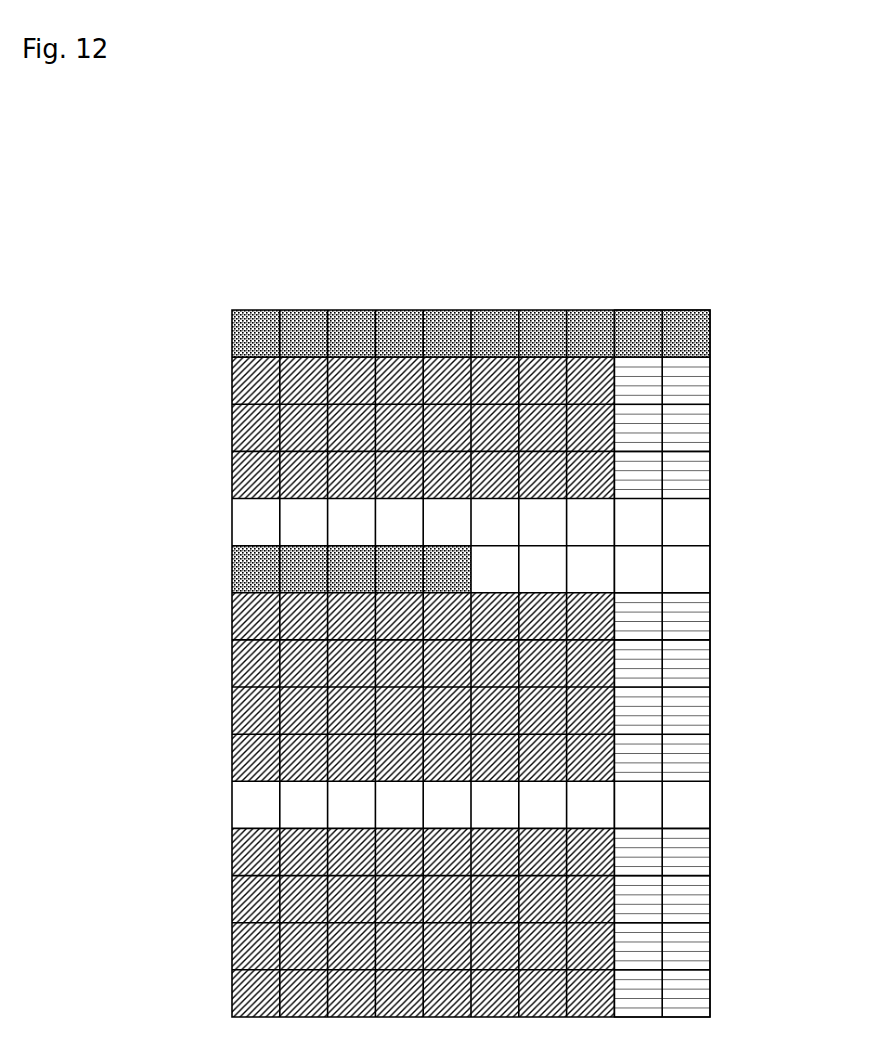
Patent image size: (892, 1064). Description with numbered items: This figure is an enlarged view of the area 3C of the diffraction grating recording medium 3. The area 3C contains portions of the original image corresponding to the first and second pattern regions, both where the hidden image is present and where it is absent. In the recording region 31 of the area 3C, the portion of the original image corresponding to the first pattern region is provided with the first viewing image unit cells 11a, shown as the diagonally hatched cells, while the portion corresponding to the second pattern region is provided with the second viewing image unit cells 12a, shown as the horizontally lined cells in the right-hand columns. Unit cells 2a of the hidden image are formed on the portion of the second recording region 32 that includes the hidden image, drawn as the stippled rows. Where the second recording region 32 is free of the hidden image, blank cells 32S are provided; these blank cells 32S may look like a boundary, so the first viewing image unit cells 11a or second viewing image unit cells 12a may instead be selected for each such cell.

The diffraction grating recording medium 3 is at (618, 206).
The area 3C is at (666, 276).
The second recording region 32 is at (451, 298).
The unit cells 2a is at (257, 328).
The first viewing image unit cells 11a is at (243, 437).
The recording region 31 is at (709, 375).
The second viewing image unit cells 12a is at (687, 492).
The blank cells 32S is at (698, 575).